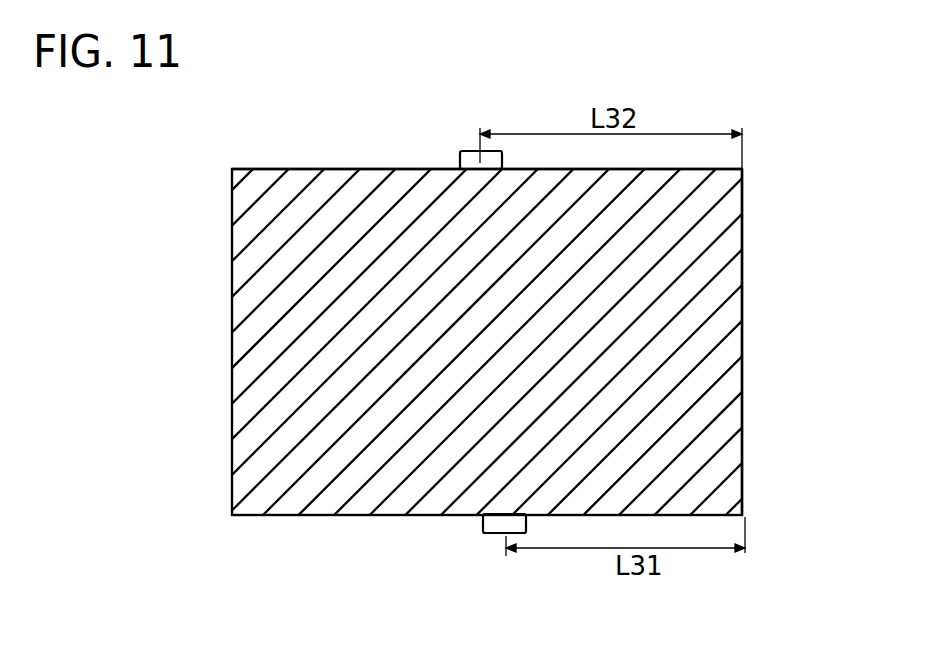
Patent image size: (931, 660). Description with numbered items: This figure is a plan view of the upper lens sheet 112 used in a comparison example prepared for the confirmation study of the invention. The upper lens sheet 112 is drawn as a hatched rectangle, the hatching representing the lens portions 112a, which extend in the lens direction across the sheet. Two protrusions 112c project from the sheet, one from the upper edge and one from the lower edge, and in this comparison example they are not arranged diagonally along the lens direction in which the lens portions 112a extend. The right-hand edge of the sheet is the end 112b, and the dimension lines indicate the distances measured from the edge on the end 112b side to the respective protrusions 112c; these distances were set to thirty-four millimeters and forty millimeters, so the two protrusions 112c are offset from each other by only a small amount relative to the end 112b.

The upper lens sheet 112 is at (230, 208).
The lens portions 112a is at (360, 172).
The end 112b is at (733, 340).
The protrusions 112c is at (466, 160).